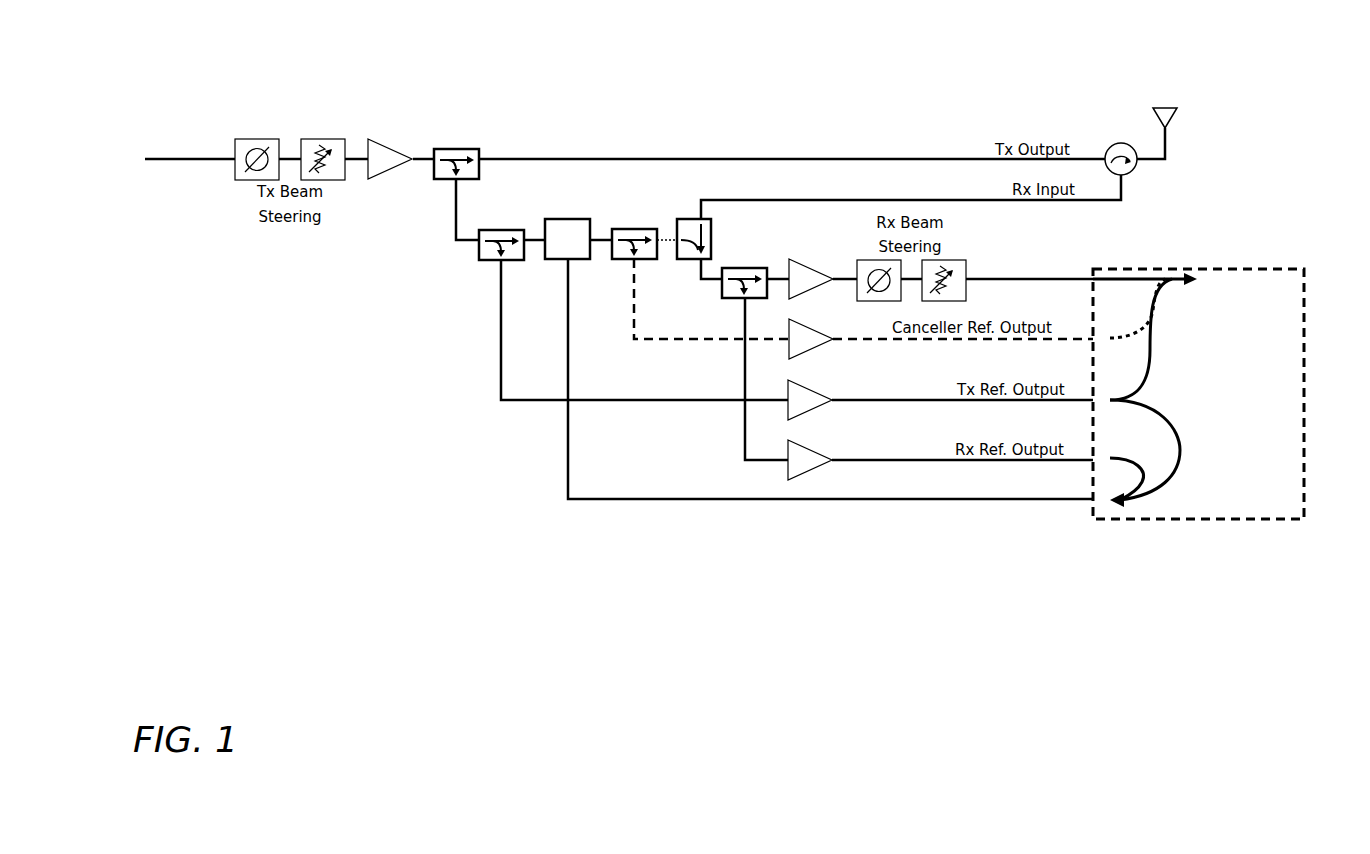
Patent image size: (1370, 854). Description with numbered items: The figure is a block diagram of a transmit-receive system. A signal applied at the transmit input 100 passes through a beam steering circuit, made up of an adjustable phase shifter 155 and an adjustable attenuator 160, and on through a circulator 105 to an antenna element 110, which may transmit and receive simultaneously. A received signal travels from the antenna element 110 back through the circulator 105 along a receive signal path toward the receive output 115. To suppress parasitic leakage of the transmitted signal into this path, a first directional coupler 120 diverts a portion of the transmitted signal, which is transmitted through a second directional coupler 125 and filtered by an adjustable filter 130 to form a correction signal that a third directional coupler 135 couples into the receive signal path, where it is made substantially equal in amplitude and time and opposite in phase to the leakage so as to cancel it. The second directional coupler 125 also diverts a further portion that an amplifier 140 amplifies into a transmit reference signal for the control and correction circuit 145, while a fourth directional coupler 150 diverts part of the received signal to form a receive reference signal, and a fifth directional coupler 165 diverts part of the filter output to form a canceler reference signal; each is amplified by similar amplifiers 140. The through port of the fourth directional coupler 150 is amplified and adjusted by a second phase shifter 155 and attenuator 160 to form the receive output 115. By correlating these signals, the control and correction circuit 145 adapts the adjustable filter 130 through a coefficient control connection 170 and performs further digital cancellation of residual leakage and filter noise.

The transmit input 100 is at (205, 162).
The circulator 105 is at (1122, 142).
The antenna element 110 is at (1170, 108).
The receive output 115 is at (1055, 285).
The first directional coupler 120 is at (458, 150).
The second directional coupler 125 is at (490, 262).
The adjustable filter 130 is at (555, 262).
The third directional coupler 135 is at (688, 262).
The amplifier 140 is at (825, 247).
The control and correction circuit 145 is at (1168, 520).
The fourth directional coupler 150 is at (742, 268).
The adjustable phase shifter 155 is at (255, 140).
The adjustable attenuator 160 is at (318, 138).
The fifth directional coupler 165 is at (668, 217).
The coefficient control connection 170 is at (727, 500).